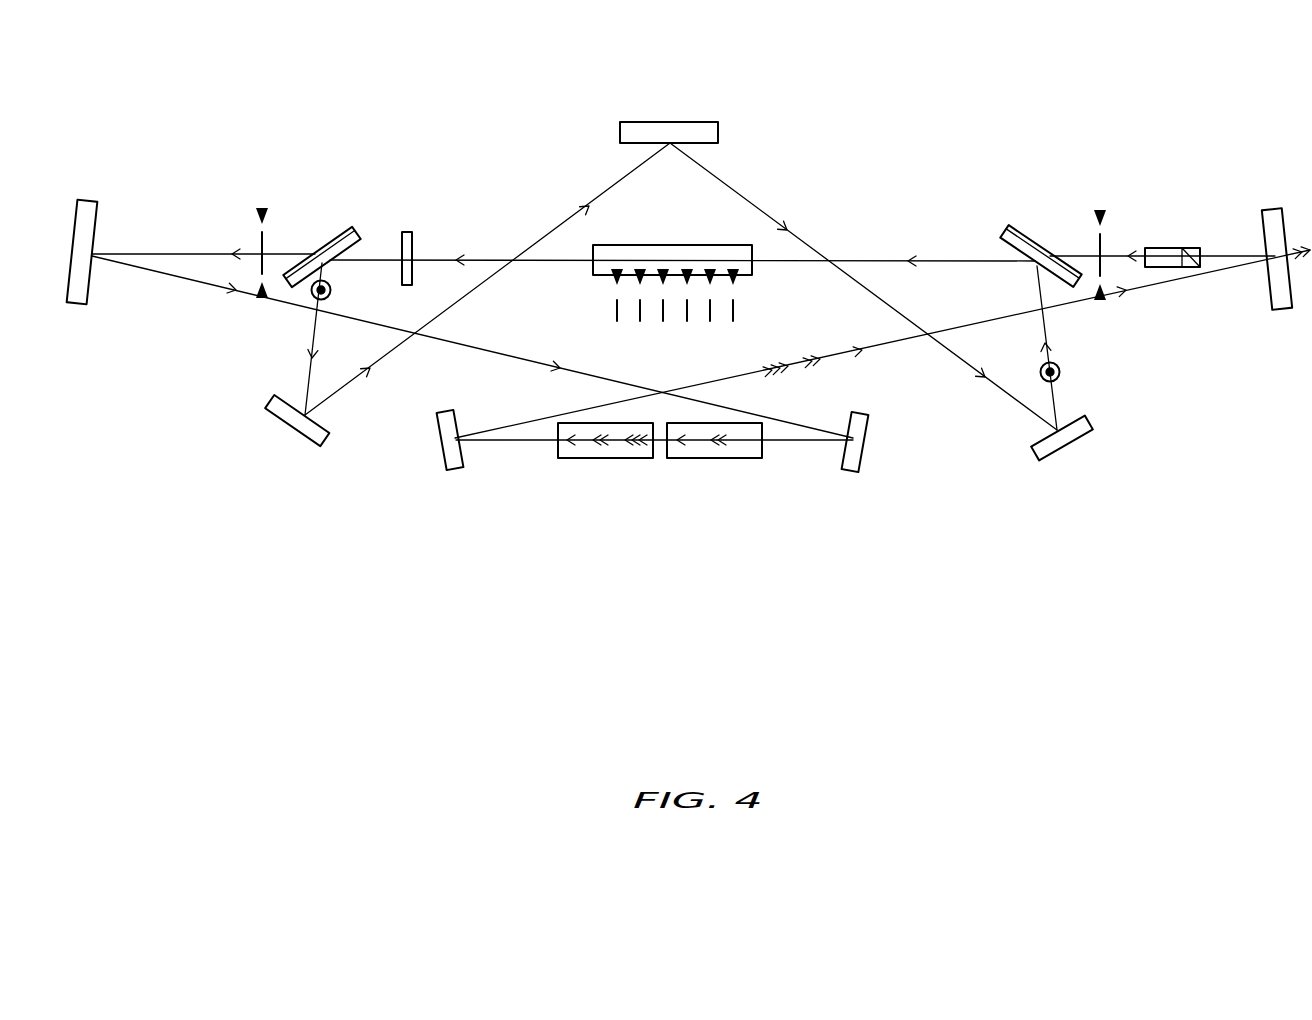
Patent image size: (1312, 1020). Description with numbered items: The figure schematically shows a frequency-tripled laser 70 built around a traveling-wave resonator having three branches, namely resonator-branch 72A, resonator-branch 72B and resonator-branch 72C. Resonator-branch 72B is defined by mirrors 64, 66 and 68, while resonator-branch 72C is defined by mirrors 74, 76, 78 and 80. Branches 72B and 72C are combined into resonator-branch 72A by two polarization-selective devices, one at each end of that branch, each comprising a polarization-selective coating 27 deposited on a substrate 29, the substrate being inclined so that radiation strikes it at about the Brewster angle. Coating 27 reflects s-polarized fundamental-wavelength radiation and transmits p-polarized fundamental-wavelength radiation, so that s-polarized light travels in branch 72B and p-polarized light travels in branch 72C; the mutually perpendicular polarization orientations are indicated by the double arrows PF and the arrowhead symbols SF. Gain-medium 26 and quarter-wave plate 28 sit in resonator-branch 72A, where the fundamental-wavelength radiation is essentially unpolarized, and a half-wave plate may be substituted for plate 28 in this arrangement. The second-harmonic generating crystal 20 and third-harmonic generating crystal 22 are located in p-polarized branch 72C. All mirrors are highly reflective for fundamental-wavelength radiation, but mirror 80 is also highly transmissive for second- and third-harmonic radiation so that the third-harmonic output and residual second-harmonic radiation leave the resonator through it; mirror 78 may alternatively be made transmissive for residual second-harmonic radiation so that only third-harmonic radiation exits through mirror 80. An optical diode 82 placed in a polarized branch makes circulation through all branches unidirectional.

The second-harmonic generating crystal 20 is at (725, 458).
The third-harmonic generating crystal 22 is at (585, 458).
The gain-medium 26 is at (632, 245).
The polarization-selective coating 27 is at (334, 240).
The quarter-wave plate 28 is at (411, 246).
The substrate 29 is at (326, 246).
The mirror 64 is at (300, 432).
The mirror 66 is at (1052, 453).
The mirror 68 is at (701, 143).
The frequency-tripled laser 70 is at (876, 660).
The resonator-branch 72A is at (682, 248).
The resonator-branch 72B is at (680, 286).
The resonator-branch 72C is at (701, 347).
The mirror 74 is at (88, 282).
The mirror 76 is at (866, 428).
The mirror 78 is at (447, 461).
The mirror 80 is at (1268, 285).
The optical diode 82 is at (1180, 244).
The polarization-orientation double arrows PF is at (1110, 232).
The polarization-orientation symbol SF is at (1061, 369).